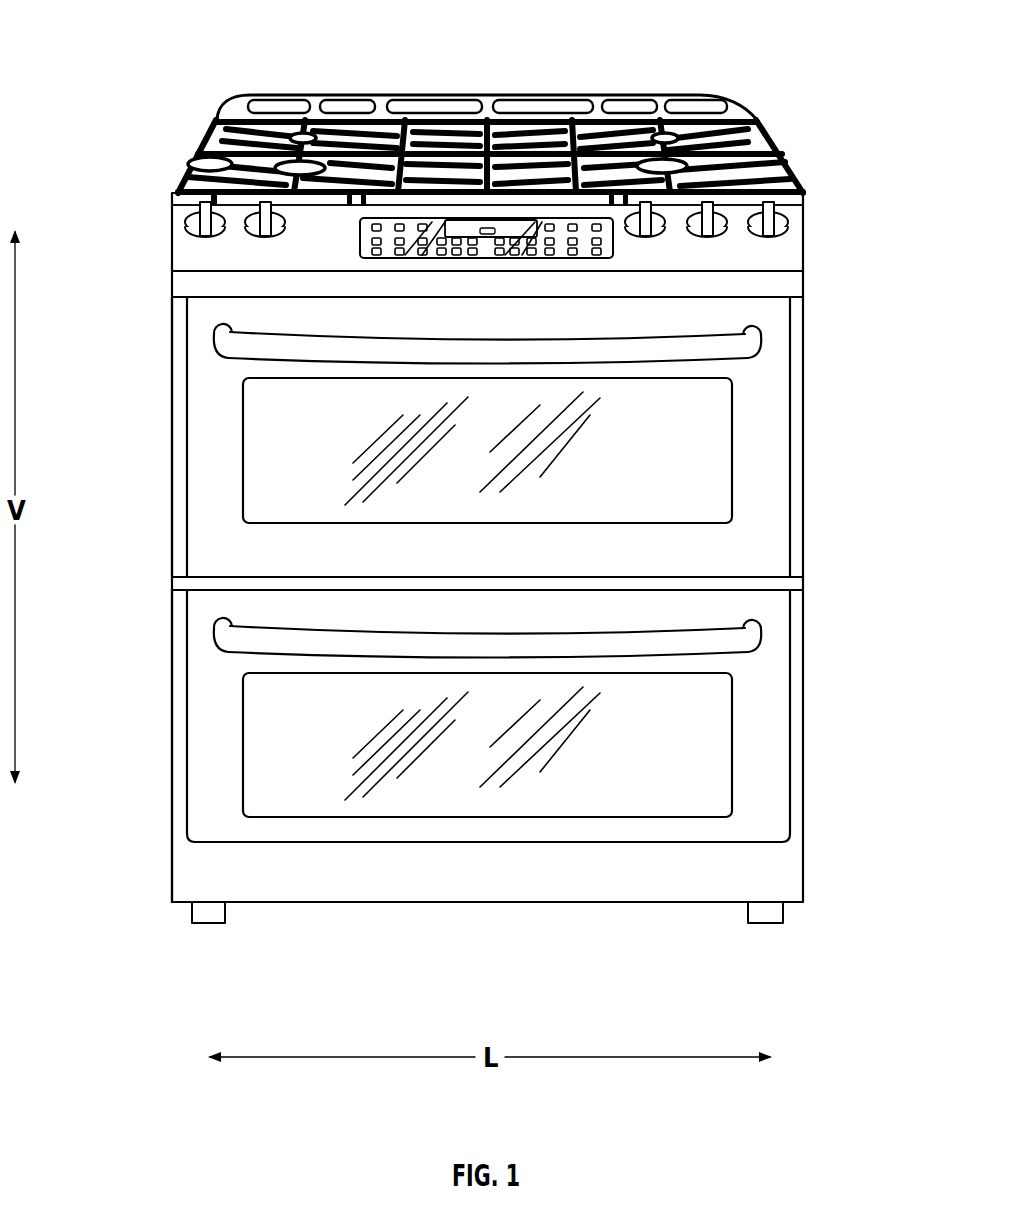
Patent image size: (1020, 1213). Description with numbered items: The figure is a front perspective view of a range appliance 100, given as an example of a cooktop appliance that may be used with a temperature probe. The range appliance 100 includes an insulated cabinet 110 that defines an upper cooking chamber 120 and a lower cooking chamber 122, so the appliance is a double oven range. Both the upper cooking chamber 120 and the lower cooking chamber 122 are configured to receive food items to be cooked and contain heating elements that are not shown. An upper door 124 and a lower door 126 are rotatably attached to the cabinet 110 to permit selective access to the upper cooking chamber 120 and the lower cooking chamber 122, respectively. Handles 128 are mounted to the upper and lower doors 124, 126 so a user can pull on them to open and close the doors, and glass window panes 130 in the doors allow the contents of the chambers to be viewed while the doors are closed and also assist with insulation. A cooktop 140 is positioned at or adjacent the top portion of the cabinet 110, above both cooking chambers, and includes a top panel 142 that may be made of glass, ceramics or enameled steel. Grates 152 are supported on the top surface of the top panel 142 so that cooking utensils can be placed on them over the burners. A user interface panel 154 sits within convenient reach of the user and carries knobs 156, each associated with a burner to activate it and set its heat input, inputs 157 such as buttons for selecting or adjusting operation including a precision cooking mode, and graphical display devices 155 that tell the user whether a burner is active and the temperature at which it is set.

The range appliance 100 is at (145, 102).
The insulated cabinet 110 is at (662, 283).
The upper cooking chamber 120 is at (763, 455).
The lower cooking chamber 122 is at (765, 768).
The upper door 124 is at (178, 510).
The lower door 126 is at (178, 777).
The handles 128 is at (310, 348).
The glass window panes 130 is at (705, 500).
The cooktop 140 is at (757, 100).
The top panel 142 is at (797, 198).
The grates 152 is at (190, 165).
The user interface panel 154 is at (360, 242).
The graphical display devices 155 is at (458, 227).
The knobs 156 is at (248, 238).
The inputs 157 is at (442, 260).